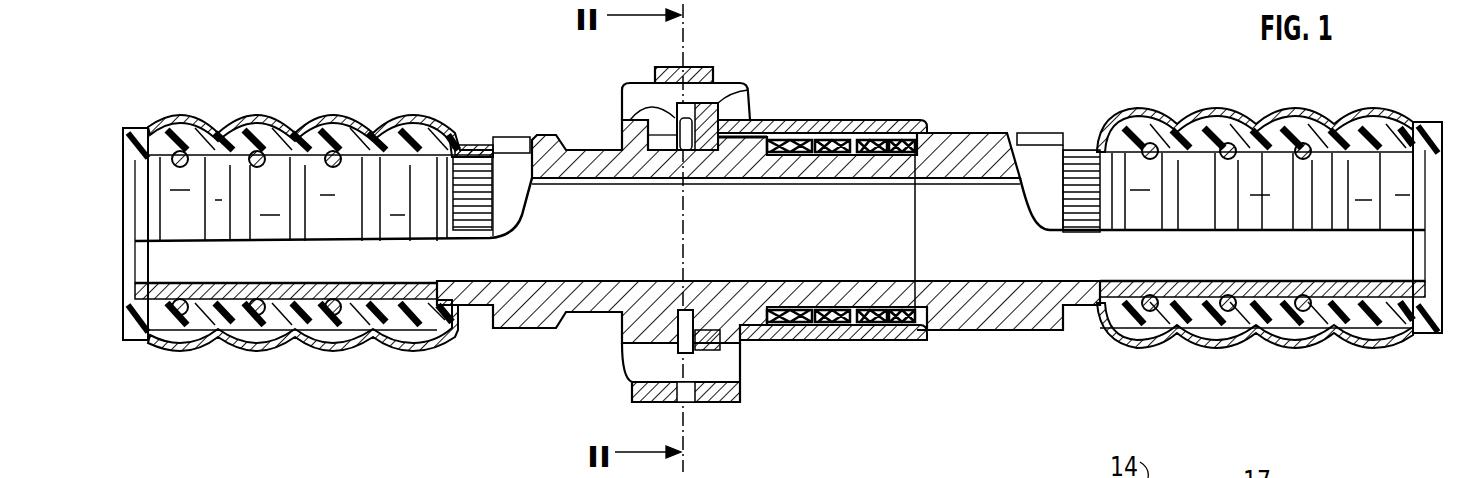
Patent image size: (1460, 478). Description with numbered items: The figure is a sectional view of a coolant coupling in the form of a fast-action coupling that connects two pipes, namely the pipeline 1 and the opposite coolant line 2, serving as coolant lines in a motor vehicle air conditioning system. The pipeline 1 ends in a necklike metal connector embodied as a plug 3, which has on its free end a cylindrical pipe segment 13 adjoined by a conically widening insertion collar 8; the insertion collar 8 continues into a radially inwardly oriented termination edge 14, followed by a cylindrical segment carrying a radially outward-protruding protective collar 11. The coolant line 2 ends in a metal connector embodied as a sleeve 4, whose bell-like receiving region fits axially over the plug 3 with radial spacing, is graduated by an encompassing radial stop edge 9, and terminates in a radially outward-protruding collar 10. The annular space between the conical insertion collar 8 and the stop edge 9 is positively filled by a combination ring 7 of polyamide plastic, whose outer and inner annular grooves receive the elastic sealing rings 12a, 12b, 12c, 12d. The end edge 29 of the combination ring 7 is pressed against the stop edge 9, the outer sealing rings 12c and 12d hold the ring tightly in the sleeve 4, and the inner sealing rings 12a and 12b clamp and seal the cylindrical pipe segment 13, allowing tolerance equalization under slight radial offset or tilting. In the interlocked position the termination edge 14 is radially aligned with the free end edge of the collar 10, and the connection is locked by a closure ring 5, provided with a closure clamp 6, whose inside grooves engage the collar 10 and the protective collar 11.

The pipeline 1 is at (298, 168).
The coolant line 2 is at (1147, 167).
The plug 3 is at (531, 318).
The sleeve 4 is at (855, 330).
The closure ring 5 is at (729, 62).
The closure clamp 6 is at (676, 130).
The combination ring 7 is at (838, 125).
The insertion collar 8 is at (727, 140).
The stop edge 9 is at (933, 130).
The collar 10 is at (708, 110).
The protective collar 11 is at (627, 330).
The sealing ring 12a is at (812, 155).
The sealing ring 12b is at (870, 155).
The sealing ring 12c is at (790, 322).
The sealing ring 12d is at (897, 324).
The cylindrical pipe segment 13 is at (845, 290).
The termination edge 14 is at (690, 155).
The end edge 29 is at (928, 318).